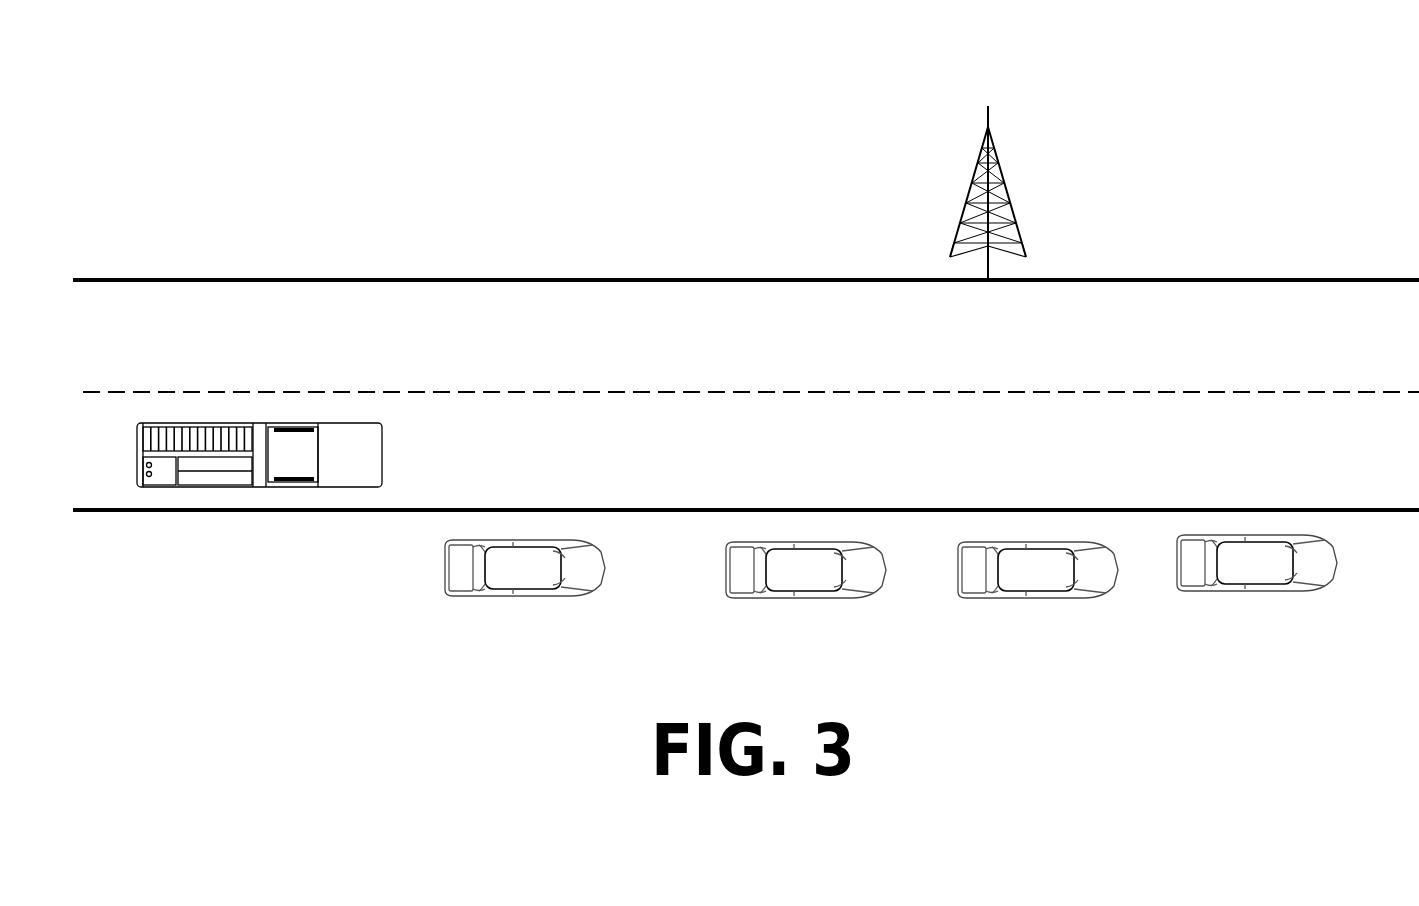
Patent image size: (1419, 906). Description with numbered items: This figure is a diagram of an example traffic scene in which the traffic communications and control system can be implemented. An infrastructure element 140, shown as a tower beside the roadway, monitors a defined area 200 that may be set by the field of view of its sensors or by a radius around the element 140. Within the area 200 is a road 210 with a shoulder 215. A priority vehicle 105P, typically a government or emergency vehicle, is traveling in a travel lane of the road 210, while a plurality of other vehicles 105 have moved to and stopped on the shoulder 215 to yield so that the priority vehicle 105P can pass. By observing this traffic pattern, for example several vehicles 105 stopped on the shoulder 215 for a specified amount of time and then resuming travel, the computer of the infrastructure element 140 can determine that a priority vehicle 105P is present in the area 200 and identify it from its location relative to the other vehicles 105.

The defined area 200 is at (1354, 110).
The road 210 is at (1412, 327).
The shoulder 215 is at (1410, 542).
The infrastructure element 140 is at (1003, 212).
The priority vehicle 105P is at (382, 456).
The vehicle 105 is at (503, 578).